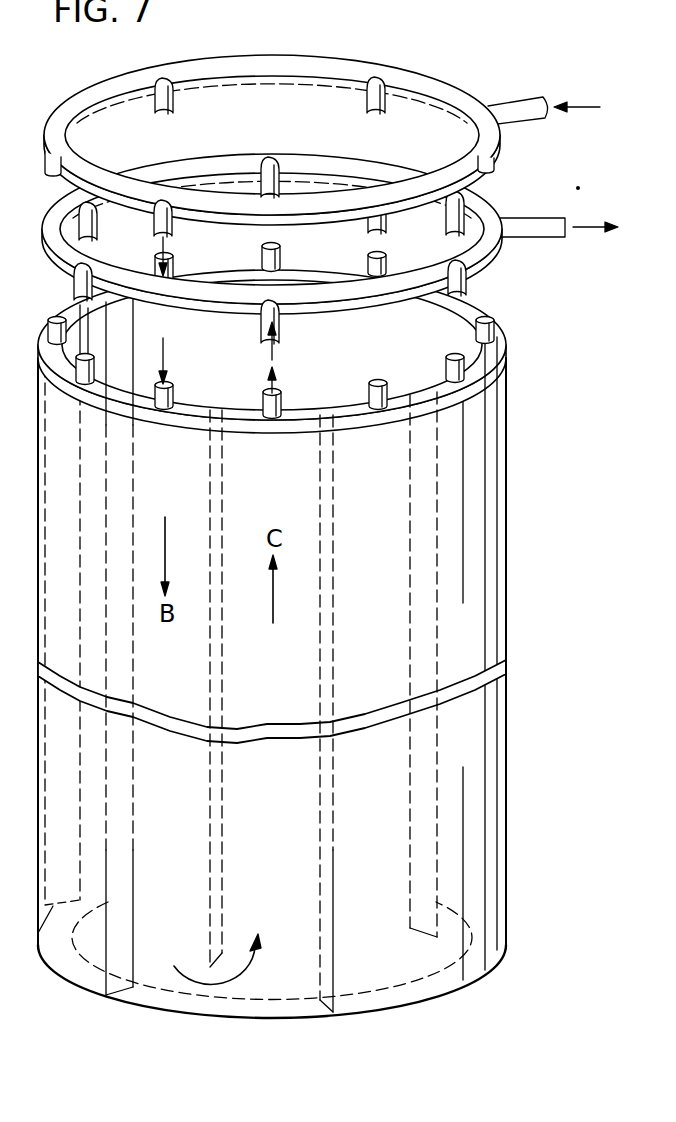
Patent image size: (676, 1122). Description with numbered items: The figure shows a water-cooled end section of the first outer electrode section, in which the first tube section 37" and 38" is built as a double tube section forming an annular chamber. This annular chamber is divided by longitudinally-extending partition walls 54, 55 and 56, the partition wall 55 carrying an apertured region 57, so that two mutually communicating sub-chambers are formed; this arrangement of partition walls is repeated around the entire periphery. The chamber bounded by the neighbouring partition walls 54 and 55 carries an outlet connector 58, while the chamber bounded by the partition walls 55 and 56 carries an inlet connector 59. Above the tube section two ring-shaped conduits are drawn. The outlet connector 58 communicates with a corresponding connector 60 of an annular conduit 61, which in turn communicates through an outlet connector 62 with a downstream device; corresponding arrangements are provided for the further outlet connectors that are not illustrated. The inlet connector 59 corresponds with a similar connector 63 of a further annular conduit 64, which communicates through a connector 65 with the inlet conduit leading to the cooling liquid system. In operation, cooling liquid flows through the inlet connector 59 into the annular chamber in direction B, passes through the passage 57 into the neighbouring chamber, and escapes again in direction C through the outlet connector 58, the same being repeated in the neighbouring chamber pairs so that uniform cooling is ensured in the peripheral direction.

The first tube section 37 is at (497, 441).
The first tube section 38 is at (543, 651).
The partition wall 54 is at (335, 545).
The partition wall 55 is at (222, 660).
The partition wall 56 is at (130, 772).
The apertured region 57 is at (213, 980).
The outlet connector 58 is at (92, 366).
The inlet connector 59 is at (173, 392).
The connector 60 is at (447, 227).
The annular conduit 61 is at (480, 251).
The outlet connector 62 is at (537, 218).
The connector 63 is at (366, 101).
The further annular conduit 64 is at (333, 66).
The connector 65 is at (512, 104).